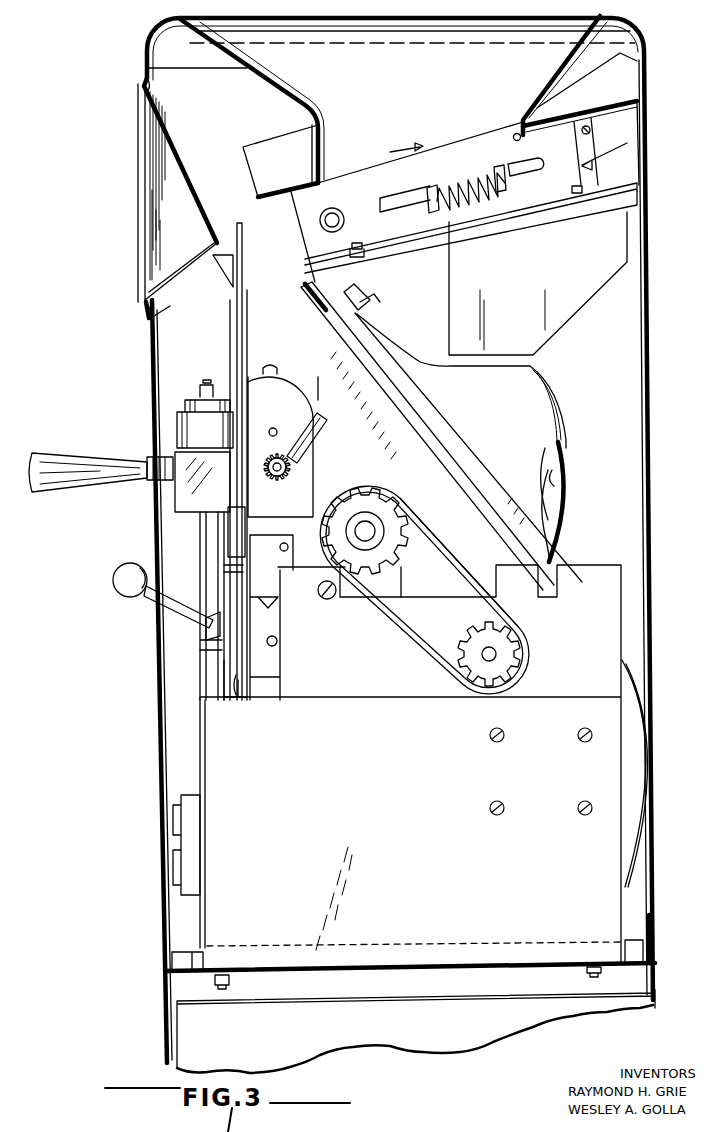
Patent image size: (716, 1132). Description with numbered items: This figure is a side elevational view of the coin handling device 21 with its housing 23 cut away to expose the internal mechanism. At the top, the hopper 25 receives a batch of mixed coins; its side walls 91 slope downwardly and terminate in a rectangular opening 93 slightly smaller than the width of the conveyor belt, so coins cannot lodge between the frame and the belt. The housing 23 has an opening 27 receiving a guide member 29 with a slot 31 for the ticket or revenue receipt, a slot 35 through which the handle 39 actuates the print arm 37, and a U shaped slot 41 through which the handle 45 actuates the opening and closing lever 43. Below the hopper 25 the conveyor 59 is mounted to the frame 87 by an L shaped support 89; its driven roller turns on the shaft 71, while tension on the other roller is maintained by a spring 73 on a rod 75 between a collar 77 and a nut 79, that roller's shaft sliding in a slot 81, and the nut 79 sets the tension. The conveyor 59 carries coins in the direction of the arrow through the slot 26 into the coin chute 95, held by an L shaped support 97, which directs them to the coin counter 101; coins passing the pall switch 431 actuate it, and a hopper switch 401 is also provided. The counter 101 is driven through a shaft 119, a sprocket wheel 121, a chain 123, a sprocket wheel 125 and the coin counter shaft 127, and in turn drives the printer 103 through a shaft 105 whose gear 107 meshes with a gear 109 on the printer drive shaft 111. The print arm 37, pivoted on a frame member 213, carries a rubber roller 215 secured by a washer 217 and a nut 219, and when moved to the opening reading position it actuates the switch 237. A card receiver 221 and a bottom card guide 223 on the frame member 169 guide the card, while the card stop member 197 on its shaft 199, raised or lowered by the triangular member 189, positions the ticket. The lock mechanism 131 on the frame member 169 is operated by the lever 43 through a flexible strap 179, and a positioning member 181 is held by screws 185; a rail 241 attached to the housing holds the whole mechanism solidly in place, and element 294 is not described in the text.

The coin handling device 21 is at (147, 765).
The housing 23 is at (652, 526).
The hopper 25 is at (147, 38).
The slot 26 is at (516, 134).
The opening 27 is at (154, 82).
The guide member 29 is at (172, 160).
The slot 31 is at (212, 240).
The slot 35 is at (160, 452).
The print arm 37 is at (206, 583).
The handle 39 is at (65, 454).
The U shaped slot 41 is at (158, 697).
The opening and closing lever 43 is at (172, 613).
The handle 45 is at (116, 578).
The conveyor 59 is at (618, 152).
The shaft 71 is at (337, 212).
The spring 73 is at (482, 190).
The rod 75 is at (404, 200).
The collar 77 is at (434, 186).
The nut 79 is at (506, 180).
The slot 81 is at (530, 167).
The frame 87 is at (286, 192).
The L shaped support 89 is at (302, 202).
The side walls 91 is at (288, 96).
The rectangular opening 93 is at (322, 162).
The coin chute 95 is at (594, 284).
The L shaped support 97 is at (630, 200).
The coin counter 101 is at (555, 402).
The printer 103 is at (282, 378).
The shaft 105 is at (312, 411).
The gear 107 is at (300, 470).
The gear 109 is at (272, 456).
The printer drive shaft 111 is at (276, 480).
The shaft 119 is at (494, 657).
The sprocket wheel 121 is at (508, 648).
The chain 123 is at (458, 559).
The sprocket wheel 125 is at (394, 506).
The coin counter shaft 127 is at (372, 533).
The lock mechanism 131 is at (215, 647).
The frame member 169 is at (244, 256).
The flexible strap 179 is at (209, 626).
The positioning member 181 is at (228, 670).
The screws 185 is at (237, 698).
The triangular member 189 is at (280, 598).
The card stop member 197 is at (224, 568).
The shaft 199 is at (285, 552).
The frame member 213 is at (192, 792).
The rubber roller 215 is at (180, 430).
The washer 217 is at (187, 405).
The nut 219 is at (200, 395).
The card receiver 221 is at (226, 272).
The bottom card guide 223 is at (228, 470).
The switch 237 is at (233, 528).
The rail 241 is at (178, 962).
The guide plate 294 is at (248, 325).
The hopper switch 401 is at (574, 482).
The pall switch 431 is at (376, 300).